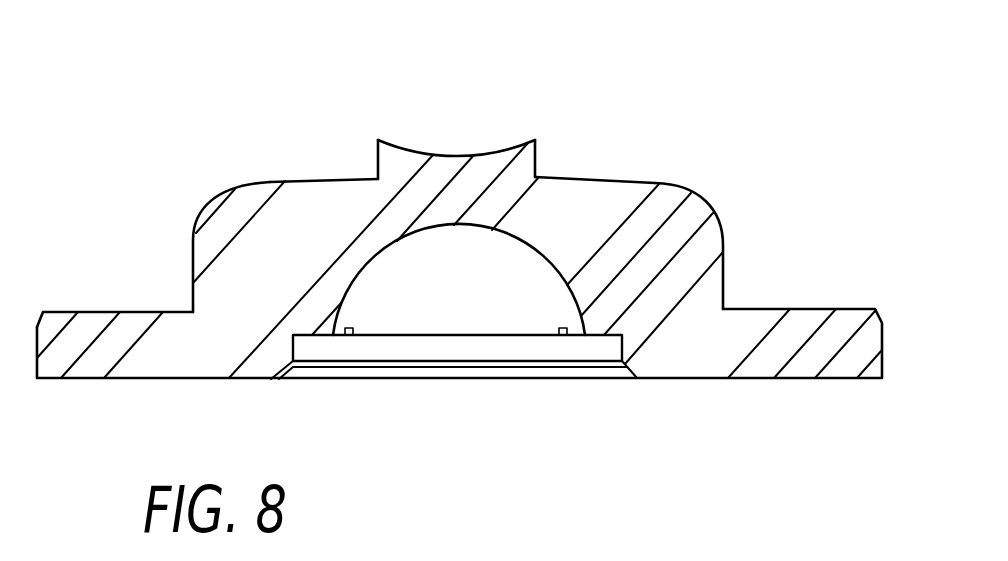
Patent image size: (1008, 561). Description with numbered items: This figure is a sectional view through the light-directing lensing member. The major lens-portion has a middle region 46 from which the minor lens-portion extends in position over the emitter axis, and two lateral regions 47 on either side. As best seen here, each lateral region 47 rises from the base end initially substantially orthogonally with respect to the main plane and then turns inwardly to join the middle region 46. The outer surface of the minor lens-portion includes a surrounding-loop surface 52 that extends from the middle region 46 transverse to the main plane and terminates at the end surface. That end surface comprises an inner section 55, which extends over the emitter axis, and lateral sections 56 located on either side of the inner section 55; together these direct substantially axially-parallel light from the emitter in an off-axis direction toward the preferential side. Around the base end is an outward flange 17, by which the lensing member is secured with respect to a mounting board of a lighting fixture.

The outward flange 17 is at (780, 303).
The middle region 46 is at (357, 177).
The lateral region 47 is at (192, 272).
The surrounding-loop surface 52 is at (537, 157).
The inner section 55 is at (453, 153).
The lateral section 56 is at (392, 140).